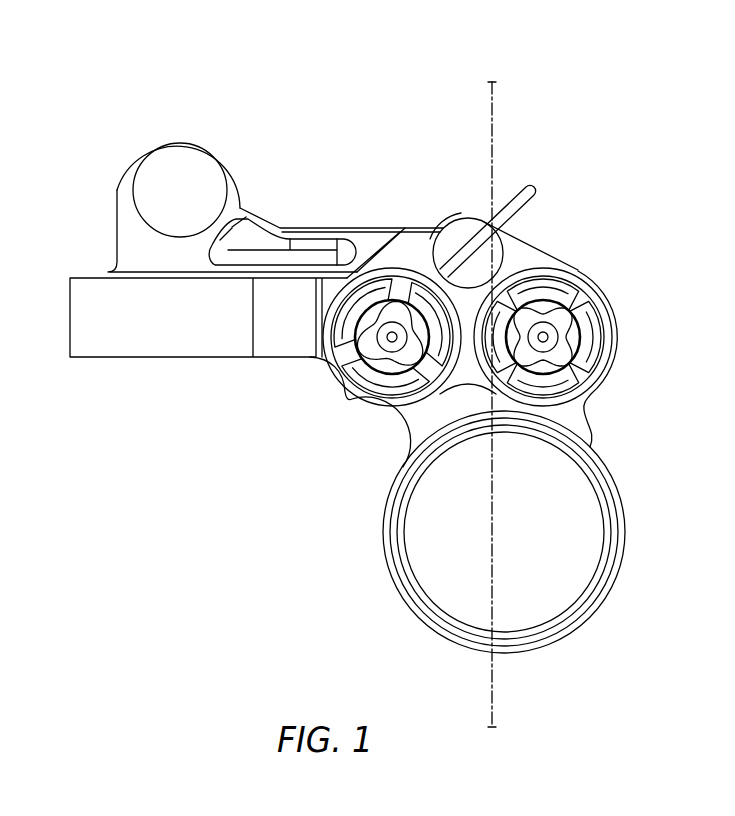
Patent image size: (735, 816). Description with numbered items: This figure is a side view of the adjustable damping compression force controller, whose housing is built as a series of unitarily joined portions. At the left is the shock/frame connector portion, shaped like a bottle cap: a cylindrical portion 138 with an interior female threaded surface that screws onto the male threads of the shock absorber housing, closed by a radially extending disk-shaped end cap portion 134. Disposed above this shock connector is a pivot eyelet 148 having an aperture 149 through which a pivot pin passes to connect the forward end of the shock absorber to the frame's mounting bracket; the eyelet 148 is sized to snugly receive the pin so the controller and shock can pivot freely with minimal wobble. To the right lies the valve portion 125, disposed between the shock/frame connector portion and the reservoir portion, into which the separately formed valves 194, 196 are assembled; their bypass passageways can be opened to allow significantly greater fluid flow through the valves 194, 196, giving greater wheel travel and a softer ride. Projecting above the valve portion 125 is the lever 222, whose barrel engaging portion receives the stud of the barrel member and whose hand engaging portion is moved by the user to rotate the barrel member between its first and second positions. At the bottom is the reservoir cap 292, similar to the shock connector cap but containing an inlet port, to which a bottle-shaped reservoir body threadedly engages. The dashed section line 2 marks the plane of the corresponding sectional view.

The valve portion 125 is at (381, 106).
The disk-shaped end cap portion 134 is at (87, 277).
The cylindrical portion 138 is at (100, 347).
The pivot eyelet 148 is at (162, 160).
The aperture 149 is at (170, 227).
The valve 194 is at (345, 406).
The valve 196 is at (602, 387).
The lever 222 is at (538, 229).
The reservoir cap 292 is at (388, 572).
The section line 2- 2 is at (500, 718).